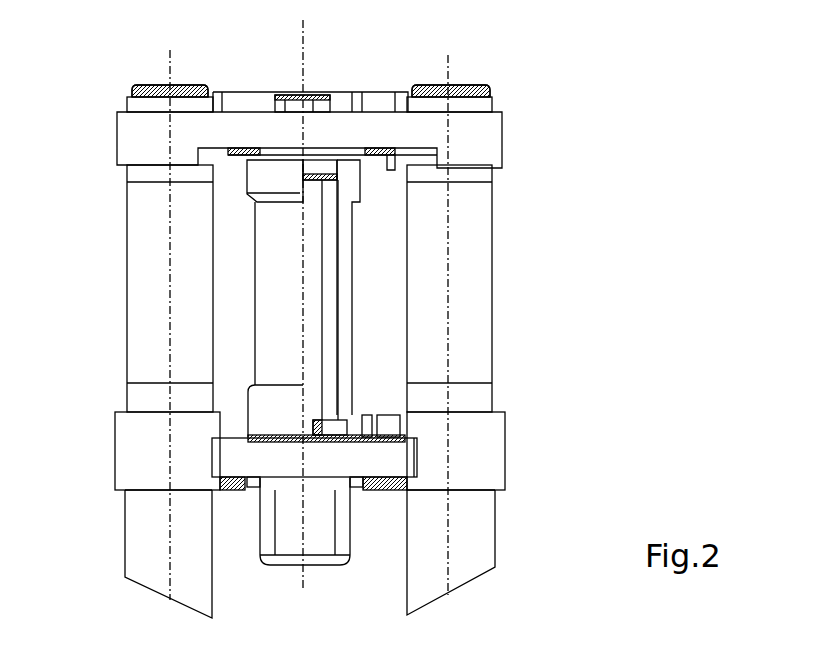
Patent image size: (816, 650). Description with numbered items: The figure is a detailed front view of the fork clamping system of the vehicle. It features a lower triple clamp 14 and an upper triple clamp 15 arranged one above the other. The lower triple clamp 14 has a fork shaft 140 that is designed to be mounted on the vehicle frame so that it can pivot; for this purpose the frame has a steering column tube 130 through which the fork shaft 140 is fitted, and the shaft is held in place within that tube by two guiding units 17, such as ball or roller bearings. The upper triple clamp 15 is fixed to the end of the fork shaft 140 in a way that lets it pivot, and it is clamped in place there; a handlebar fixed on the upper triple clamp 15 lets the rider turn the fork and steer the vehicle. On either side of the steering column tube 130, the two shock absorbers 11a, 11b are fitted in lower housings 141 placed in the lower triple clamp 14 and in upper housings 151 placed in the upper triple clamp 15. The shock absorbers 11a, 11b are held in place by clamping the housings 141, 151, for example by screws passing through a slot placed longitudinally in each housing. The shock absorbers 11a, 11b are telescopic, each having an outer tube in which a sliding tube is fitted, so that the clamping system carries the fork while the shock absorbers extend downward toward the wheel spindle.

The upper triple clamp 15 is at (370, 125).
The upper housings 151 is at (138, 90).
The shock absorber 11a is at (150, 258).
The shock absorber 11b is at (473, 370).
The steering column tube 130 is at (280, 247).
The fork shaft 140 is at (315, 230).
The guiding units 17 is at (323, 183).
The lower triple clamp 14 is at (282, 460).
The lower housings 141 is at (161, 499).